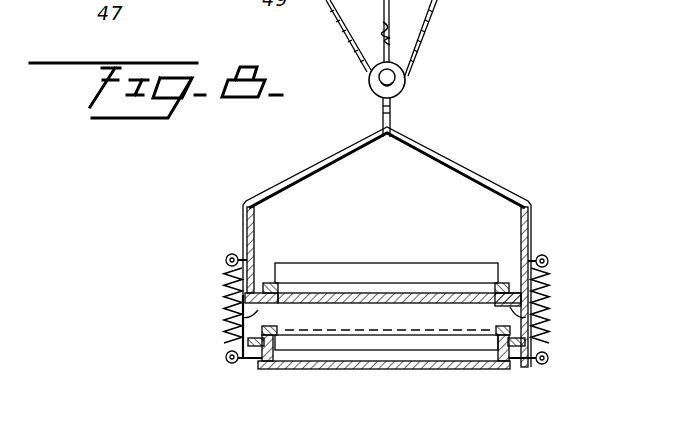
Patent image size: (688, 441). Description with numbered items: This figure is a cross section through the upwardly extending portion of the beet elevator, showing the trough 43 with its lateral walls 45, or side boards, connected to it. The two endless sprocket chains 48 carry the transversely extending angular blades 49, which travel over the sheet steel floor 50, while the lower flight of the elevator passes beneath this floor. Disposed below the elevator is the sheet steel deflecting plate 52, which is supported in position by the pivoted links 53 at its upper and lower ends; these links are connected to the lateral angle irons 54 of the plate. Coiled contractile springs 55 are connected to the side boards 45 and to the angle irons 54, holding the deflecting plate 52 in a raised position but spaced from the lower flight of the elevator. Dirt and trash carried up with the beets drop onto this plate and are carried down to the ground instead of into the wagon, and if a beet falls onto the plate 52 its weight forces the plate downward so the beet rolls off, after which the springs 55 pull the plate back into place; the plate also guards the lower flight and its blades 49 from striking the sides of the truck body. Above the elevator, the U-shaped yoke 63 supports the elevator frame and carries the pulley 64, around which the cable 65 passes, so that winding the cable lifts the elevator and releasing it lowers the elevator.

The trough 43 is at (258, 308).
The lateral walls 45 is at (246, 233).
The endless sprocket chains 48 is at (271, 282).
The angular blades 49 is at (422, 268).
The sheet steel floor 50 is at (420, 303).
The deflecting plate 52 is at (478, 369).
The pivoted links 53 is at (248, 323).
The lateral angle irons 54 is at (247, 363).
The coiled contractile springs 55 is at (238, 279).
The U-shaped yoke 63 is at (487, 177).
The pulley 64 is at (405, 87).
The cable 65 is at (418, 50).